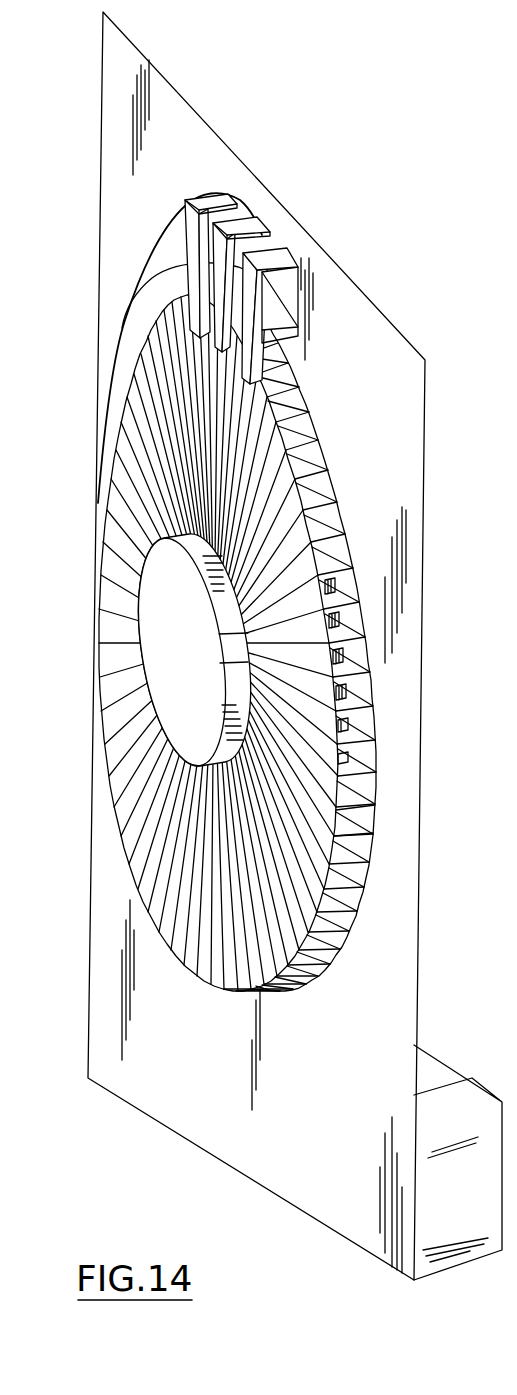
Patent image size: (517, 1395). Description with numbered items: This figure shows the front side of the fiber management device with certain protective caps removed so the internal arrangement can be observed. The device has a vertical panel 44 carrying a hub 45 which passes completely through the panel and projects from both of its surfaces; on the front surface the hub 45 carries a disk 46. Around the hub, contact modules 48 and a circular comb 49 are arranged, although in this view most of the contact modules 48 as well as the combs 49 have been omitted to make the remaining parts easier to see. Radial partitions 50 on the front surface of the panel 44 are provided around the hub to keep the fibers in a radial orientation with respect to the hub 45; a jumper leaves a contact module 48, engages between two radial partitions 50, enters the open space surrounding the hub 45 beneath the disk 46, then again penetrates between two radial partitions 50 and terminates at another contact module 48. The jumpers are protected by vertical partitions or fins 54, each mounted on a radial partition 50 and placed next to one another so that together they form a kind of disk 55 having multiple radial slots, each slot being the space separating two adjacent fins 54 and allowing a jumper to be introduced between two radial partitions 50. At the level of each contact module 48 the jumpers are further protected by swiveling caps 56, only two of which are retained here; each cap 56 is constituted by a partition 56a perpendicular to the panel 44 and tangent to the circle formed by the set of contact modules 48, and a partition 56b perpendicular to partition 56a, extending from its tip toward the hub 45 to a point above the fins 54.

The vertical panel 44 is at (393, 464).
The hub 45 is at (238, 647).
The disk 46 is at (165, 663).
The contact module 48 is at (165, 242).
The circular comb 49 is at (150, 296).
The radial partition 50 is at (350, 812).
The fin 54 is at (311, 758).
The disk 55 is at (122, 772).
The swiveling cap 56 is at (217, 180).
The partition 56a is at (246, 218).
The partition 56b is at (186, 222).